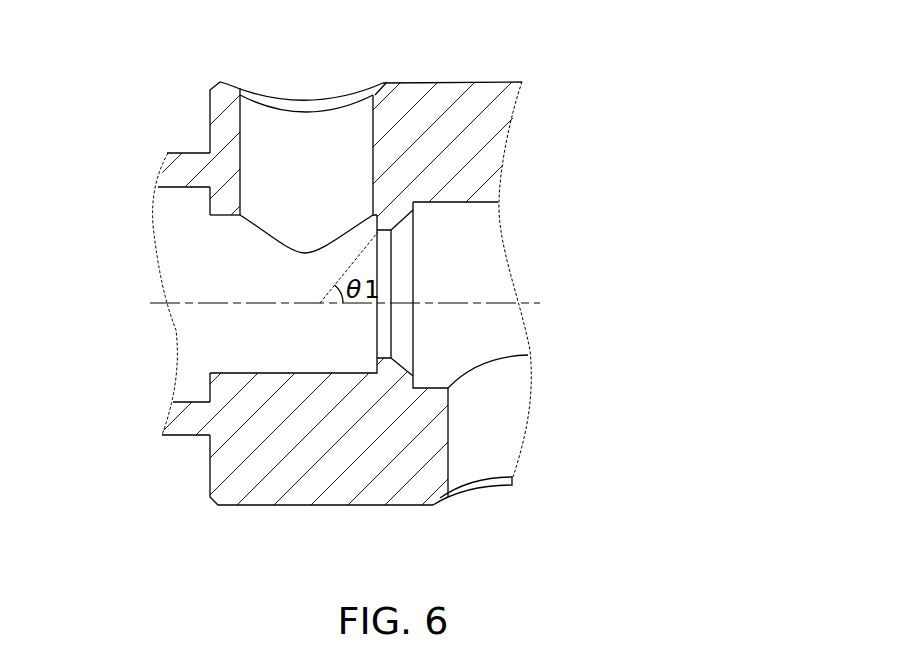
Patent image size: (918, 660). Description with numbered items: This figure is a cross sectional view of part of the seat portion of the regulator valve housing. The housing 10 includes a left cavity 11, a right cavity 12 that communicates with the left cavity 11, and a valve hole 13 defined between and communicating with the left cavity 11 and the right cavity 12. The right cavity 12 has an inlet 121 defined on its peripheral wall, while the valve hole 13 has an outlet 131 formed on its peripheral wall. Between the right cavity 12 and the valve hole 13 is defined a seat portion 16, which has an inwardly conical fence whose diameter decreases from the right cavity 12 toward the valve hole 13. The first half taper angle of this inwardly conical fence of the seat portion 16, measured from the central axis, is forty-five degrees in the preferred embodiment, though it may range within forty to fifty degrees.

The housing 10 is at (452, 80).
The left cavity 11 is at (180, 247).
The right cavity 12 is at (500, 327).
The inlet 121 is at (480, 457).
The valve hole 13 is at (278, 350).
The outlet 131 is at (307, 100).
The seat portion 16 is at (398, 222).